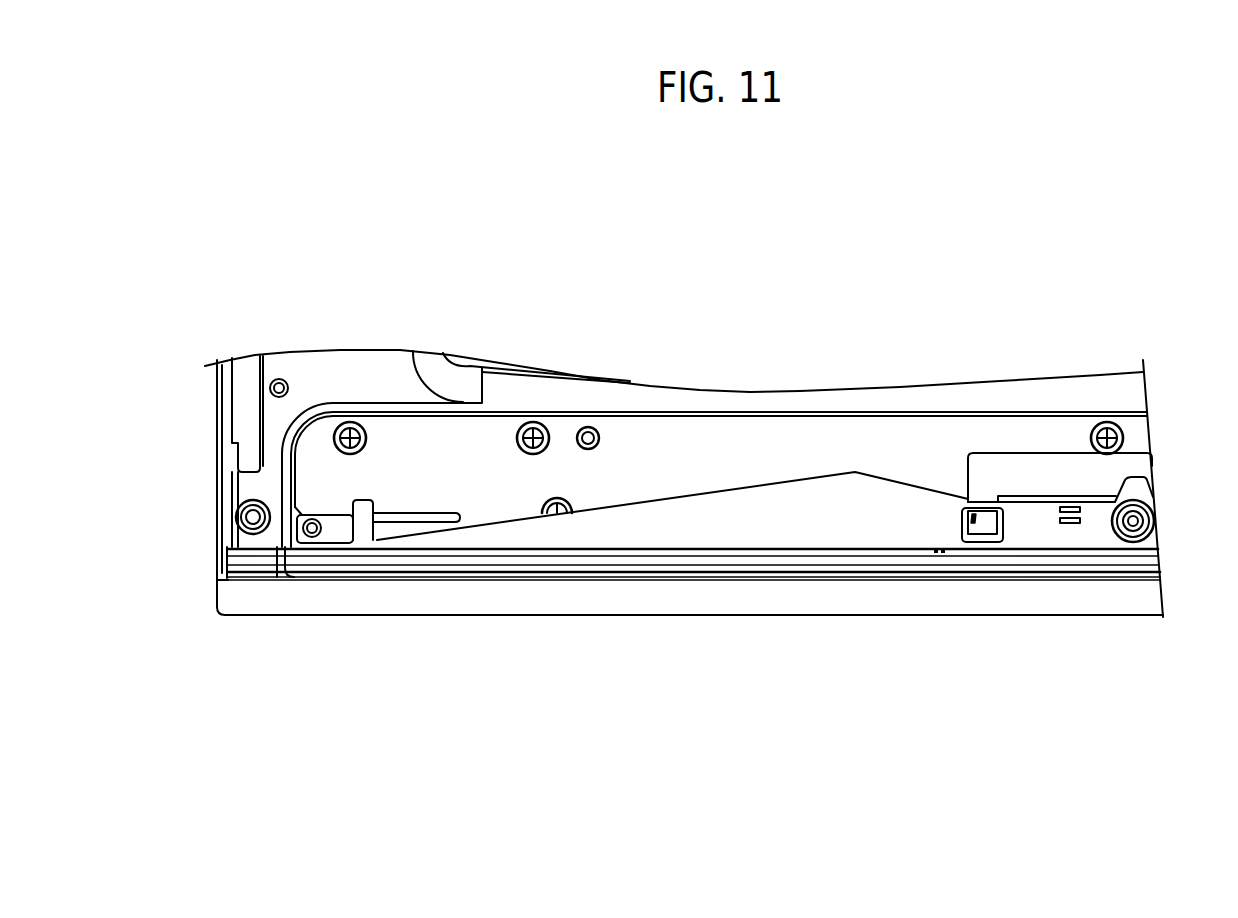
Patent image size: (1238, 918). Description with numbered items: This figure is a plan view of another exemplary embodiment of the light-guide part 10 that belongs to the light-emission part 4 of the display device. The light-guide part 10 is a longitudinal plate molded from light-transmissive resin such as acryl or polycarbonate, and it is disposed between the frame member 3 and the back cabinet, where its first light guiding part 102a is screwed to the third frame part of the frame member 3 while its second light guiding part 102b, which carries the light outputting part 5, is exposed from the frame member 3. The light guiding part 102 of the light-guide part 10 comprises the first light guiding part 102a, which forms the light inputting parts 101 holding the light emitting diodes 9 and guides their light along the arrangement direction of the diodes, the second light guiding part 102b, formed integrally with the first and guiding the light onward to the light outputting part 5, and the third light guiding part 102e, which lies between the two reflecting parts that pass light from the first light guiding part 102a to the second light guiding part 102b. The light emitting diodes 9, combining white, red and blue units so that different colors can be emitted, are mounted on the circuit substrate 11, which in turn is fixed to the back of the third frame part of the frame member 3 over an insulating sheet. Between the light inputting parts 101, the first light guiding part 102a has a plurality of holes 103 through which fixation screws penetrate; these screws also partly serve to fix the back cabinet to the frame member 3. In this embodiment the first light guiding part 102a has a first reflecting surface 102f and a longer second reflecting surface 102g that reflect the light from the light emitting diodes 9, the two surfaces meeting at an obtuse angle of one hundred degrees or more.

The frame member 3 is at (280, 418).
The light-emission part 4 is at (217, 580).
The light outputting part 5 is at (233, 613).
The light emitting diodes 9 is at (980, 518).
The light-guide part 10 is at (603, 618).
The circuit substrate 11 is at (1077, 478).
The light inputting parts 101 is at (1000, 528).
The light guiding part 102 is at (1090, 528).
The first light guiding part 102a is at (782, 507).
The second light guiding part 102b is at (433, 602).
The third light guiding part 102e is at (863, 563).
The first reflecting surface 102f is at (898, 477).
The second reflecting surface 102g is at (667, 495).
The holes 103 is at (1132, 523).